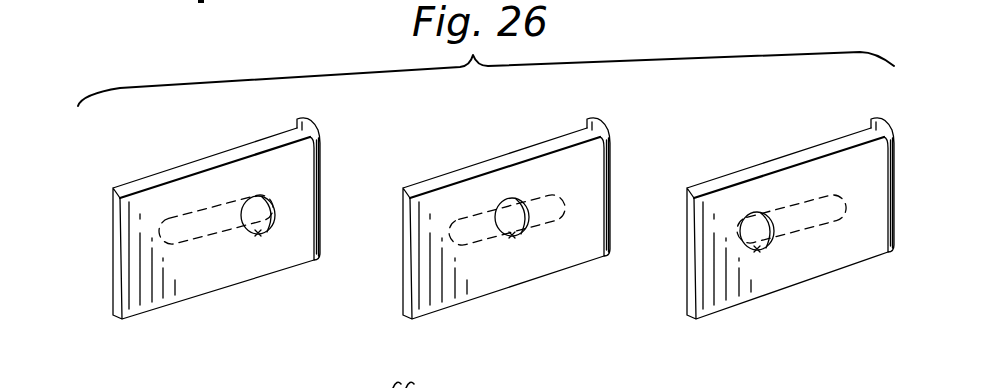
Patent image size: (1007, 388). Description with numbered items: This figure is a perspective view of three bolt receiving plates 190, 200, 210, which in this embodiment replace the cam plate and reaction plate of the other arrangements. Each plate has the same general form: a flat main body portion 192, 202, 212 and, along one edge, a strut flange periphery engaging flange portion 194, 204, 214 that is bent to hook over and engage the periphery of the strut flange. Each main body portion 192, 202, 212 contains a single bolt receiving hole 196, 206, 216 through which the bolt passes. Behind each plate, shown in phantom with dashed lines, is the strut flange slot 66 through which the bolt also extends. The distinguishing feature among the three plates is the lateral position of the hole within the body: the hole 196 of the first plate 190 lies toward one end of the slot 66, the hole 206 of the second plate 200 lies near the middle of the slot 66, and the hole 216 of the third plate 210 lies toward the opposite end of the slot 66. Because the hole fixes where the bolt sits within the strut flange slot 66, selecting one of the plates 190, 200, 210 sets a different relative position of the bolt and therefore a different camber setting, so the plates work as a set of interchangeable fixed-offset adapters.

The plate 190 is at (251, 239).
The main body portion 192 is at (213, 213).
The strut flange periphery engaging flange portion 194 is at (343, 181).
The bolt receiving hole 196 is at (263, 236).
The strut flange slot 66 is at (207, 246).
The plate 200 is at (533, 221).
The main body portion 202 is at (503, 216).
The strut flange periphery engaging flange portion 204 is at (625, 173).
The bolt receiving hole 206 is at (517, 238).
The plate 210 is at (816, 220).
The main body portion 212 is at (782, 244).
The strut flange periphery engaging flange portion 214 is at (906, 166).
The bolt receiving hole 216 is at (763, 252).